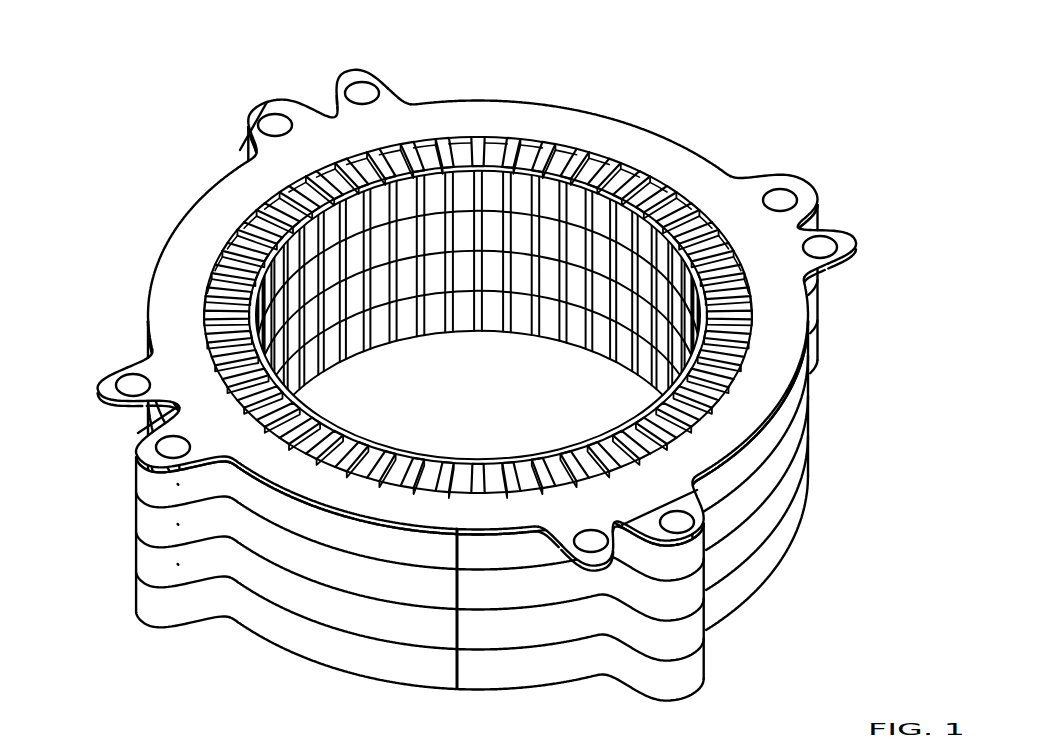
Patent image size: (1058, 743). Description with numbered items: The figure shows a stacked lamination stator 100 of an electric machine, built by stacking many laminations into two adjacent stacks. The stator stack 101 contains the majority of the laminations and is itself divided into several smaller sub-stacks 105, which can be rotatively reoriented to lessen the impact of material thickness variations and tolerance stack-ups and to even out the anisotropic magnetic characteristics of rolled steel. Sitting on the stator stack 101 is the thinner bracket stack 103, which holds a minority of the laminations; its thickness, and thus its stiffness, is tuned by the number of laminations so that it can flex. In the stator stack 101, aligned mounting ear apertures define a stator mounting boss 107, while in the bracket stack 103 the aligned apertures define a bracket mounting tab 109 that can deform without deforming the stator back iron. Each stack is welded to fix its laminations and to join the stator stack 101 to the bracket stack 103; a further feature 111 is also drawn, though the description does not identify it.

The stator 100 is at (589, 63).
The stator stack 101 is at (757, 485).
The bracket stack 103 is at (770, 342).
The sub-stacks 105 is at (320, 524).
The stator mounting boss 107 is at (237, 120).
The bracket mounting tab 109 is at (373, 73).
The seam line 111 is at (458, 626).